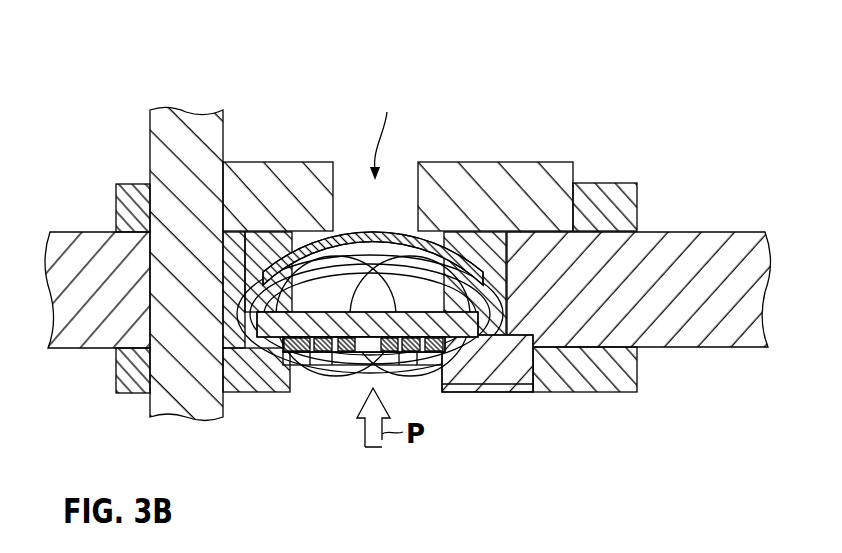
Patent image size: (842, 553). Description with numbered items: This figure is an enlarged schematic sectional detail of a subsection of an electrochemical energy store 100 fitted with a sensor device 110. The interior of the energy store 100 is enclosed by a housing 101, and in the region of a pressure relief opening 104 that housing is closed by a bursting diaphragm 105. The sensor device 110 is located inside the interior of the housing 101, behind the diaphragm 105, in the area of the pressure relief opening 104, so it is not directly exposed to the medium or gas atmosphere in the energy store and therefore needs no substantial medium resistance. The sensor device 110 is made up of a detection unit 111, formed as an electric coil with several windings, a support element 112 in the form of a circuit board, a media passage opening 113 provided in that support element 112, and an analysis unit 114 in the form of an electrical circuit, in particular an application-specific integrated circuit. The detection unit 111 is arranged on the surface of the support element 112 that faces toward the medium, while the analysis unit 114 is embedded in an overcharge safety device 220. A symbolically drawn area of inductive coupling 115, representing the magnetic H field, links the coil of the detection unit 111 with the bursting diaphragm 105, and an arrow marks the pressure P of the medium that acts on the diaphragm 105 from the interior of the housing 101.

The electrochemical energy store 100 is at (147, 67).
The housing 101 is at (690, 266).
The pressure relief opening 104 is at (385, 131).
The bursting diaphragm 105 is at (360, 233).
The sensor device 110 is at (432, 424).
The detection unit 111 is at (410, 360).
The support element 112 is at (328, 362).
The media passage opening 113 is at (380, 234).
The analysis unit 114 is at (505, 367).
The area of inductive coupling 115 is at (310, 362).
The overcharge safety device 220 is at (512, 197).